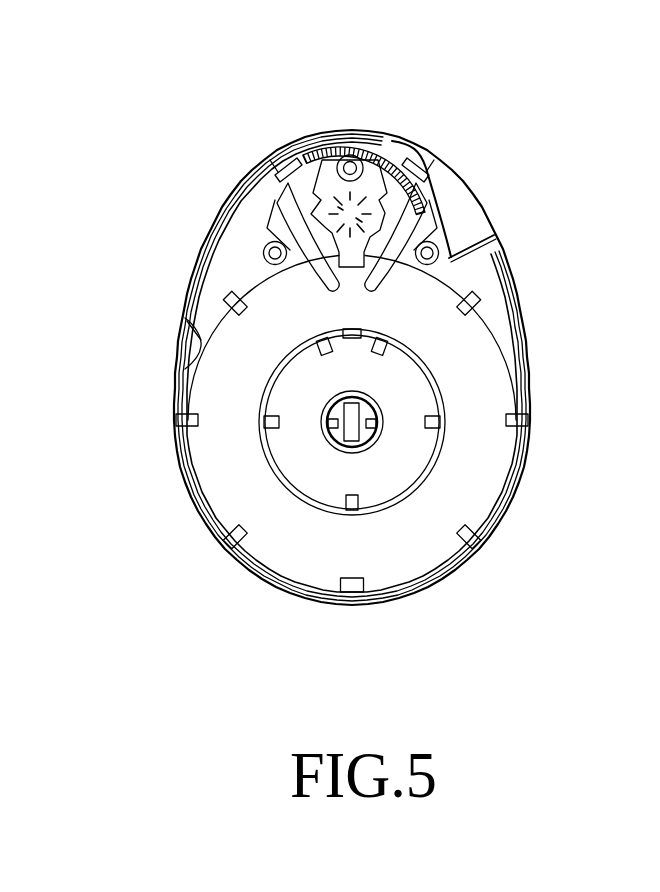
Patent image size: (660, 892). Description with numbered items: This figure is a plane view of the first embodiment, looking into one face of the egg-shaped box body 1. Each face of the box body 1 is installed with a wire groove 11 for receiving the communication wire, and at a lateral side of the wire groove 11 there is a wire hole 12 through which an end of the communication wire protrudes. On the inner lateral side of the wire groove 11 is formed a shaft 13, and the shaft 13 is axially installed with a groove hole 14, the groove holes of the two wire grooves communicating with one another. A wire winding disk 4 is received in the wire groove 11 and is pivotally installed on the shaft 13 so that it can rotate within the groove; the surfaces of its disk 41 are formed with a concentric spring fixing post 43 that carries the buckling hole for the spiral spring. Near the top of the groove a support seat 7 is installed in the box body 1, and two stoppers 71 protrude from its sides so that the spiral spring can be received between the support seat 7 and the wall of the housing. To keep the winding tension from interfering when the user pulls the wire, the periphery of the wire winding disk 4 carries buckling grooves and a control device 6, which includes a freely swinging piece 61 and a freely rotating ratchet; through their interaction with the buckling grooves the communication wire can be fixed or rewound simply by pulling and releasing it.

The box body 1 is at (480, 547).
The wire winding disk 4 is at (490, 450).
The control device 6 is at (422, 198).
The support seat 7 is at (335, 156).
The wire groove 11 is at (205, 305).
The wire hole 12 is at (465, 212).
The shaft 13 is at (360, 437).
The groove hole 14 is at (352, 425).
The disk 41 is at (452, 493).
The spring fixing post 43 is at (432, 388).
The swinging piece 61 is at (282, 158).
The stopper 71 is at (318, 285).